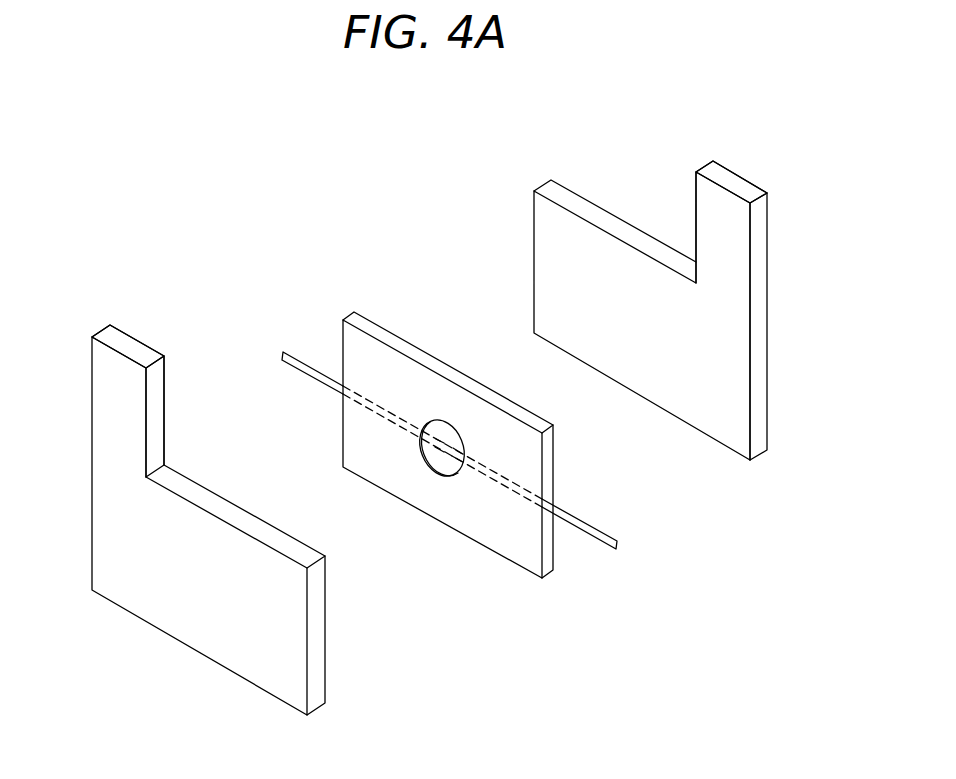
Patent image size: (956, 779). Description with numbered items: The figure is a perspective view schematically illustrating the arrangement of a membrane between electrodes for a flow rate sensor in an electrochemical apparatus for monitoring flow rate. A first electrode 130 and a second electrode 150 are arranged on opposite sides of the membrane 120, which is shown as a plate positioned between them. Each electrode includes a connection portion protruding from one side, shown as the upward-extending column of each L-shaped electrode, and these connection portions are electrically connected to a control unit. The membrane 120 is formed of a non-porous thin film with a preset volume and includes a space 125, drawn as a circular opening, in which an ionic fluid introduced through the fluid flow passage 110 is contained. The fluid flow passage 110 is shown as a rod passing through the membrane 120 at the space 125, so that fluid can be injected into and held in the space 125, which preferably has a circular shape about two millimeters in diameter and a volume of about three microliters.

The fluid flow passage 110 is at (298, 361).
The membrane 120 is at (397, 342).
The space 125 is at (433, 474).
The first electrode 130 is at (228, 482).
The second electrode 150 is at (627, 197).